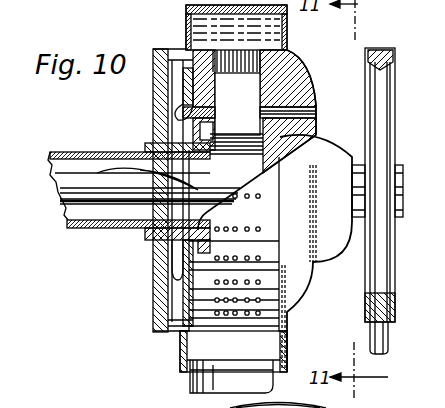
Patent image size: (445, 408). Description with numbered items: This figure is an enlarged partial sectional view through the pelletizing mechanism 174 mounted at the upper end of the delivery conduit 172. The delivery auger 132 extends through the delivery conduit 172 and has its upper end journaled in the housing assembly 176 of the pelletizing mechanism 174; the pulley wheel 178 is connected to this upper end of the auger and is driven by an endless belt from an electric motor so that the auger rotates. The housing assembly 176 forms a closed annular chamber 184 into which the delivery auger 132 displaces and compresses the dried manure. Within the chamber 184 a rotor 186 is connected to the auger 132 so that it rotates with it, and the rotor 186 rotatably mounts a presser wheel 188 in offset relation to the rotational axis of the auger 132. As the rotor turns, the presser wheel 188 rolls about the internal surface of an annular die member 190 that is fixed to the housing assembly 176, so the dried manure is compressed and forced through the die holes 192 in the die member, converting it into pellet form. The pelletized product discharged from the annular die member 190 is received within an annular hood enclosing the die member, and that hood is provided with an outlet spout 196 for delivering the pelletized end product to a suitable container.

The delivery auger 132 is at (66, 175).
The delivery conduit 172 is at (90, 229).
The pelletizing mechanism 174 is at (157, 49).
The housing assembly 176 is at (162, 301).
The pulley wheel 178 is at (390, 110).
The annular chamber 184 is at (262, 125).
The rotor 186 is at (298, 88).
The presser wheel 188 is at (250, 107).
The annular die member 190 is at (283, 58).
The die holes 192 is at (220, 50).
The outlet spout 196 is at (190, 371).